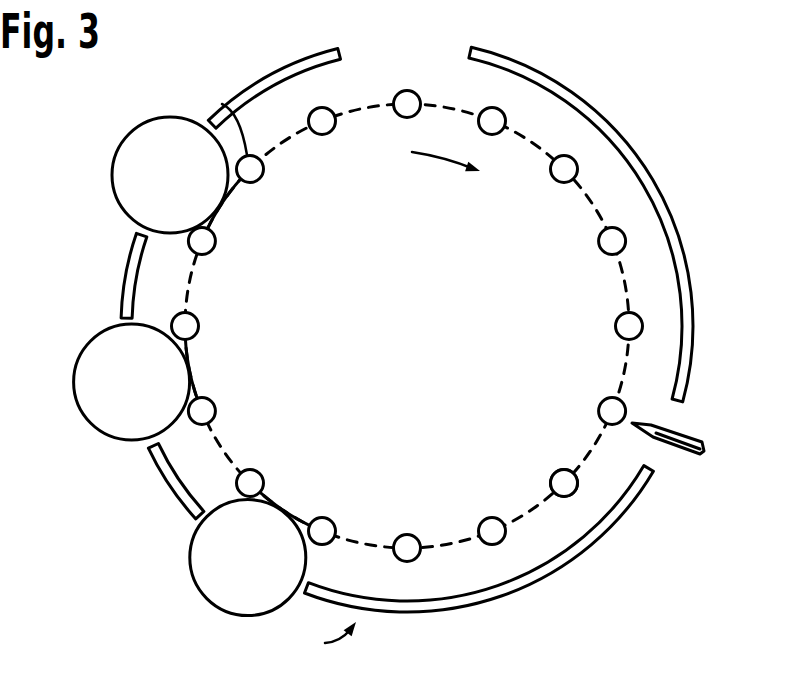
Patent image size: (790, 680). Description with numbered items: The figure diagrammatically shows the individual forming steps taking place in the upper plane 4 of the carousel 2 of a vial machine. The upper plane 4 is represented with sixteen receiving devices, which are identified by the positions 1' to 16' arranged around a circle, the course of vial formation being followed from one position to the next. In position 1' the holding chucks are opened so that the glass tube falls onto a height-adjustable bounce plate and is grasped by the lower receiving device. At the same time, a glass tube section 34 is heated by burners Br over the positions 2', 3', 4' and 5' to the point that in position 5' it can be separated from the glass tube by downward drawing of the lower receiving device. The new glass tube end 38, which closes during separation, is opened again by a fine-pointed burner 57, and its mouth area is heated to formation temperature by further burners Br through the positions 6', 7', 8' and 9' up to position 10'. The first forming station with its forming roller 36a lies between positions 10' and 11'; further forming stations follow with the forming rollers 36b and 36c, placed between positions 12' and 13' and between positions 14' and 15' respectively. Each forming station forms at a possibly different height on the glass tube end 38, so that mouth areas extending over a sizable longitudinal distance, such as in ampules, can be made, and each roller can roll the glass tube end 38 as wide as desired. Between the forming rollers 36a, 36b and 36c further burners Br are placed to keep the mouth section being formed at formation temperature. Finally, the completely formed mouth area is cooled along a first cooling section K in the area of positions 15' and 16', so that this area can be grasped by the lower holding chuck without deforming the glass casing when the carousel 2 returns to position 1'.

The carousel 2 is at (407, 382).
The upper plane 4 is at (329, 641).
The burners Br is at (657, 193).
The first cooling section K is at (268, 74).
The glass tube section 34 is at (222, 104).
The forming roller 36a is at (213, 577).
The forming roller 36b is at (110, 347).
The forming roller 36c is at (137, 143).
The glass tube end 38 is at (575, 480).
The fine-pointed burner 57 is at (697, 440).
The position 1' is at (407, 122).
The position 2' is at (491, 137).
The position 3' is at (554, 181).
The position 4' is at (599, 248).
The position 5' is at (615, 329).
The position 6' is at (600, 407).
The position 7' is at (559, 471).
The position 8' is at (491, 516).
The position 9' is at (407, 533).
The position 10' is at (328, 516).
The position 11' is at (262, 472).
The position 12' is at (218, 405).
The position 13' is at (203, 329).
The position 14' is at (220, 247).
The position 15' is at (264, 180).
The position 16' is at (327, 136).